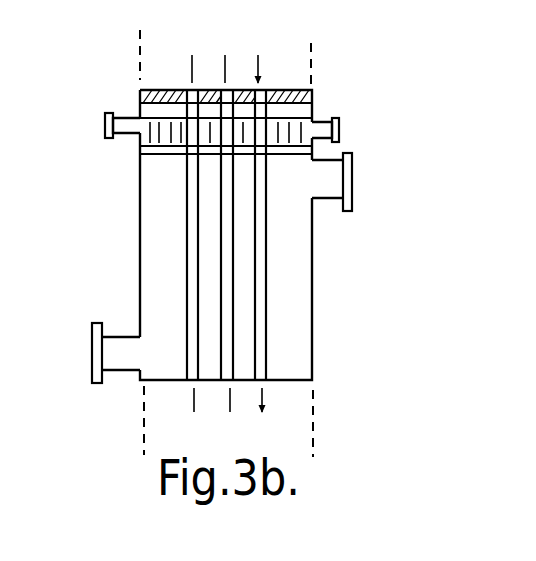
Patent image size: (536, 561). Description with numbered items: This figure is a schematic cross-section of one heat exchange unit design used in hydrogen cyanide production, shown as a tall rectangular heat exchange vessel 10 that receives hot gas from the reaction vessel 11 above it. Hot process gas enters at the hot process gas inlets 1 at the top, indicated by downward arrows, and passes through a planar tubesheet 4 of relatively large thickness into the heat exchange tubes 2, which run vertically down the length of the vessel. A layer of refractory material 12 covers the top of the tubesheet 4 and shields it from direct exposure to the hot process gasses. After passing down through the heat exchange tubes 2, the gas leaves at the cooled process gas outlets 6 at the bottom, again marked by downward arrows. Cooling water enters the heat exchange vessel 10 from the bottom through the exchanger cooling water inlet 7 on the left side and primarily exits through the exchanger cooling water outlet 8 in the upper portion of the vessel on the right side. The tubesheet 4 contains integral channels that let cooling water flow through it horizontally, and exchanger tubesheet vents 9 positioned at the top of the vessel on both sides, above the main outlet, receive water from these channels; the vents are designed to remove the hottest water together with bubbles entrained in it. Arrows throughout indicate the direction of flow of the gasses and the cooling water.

The hot process gas inlet 1 is at (225, 50).
The heat exchange tubes 2 is at (236, 282).
The tubesheet 4 is at (313, 111).
The cooled process gas outlet 6 is at (228, 420).
The exchanger cooling water inlet 7 is at (87, 352).
The exchanger cooling water outlet 8 is at (358, 182).
The exchanger tubesheet vent 9 is at (100, 127).
The heat exchange vessel 10 is at (314, 322).
The reaction vessel 11 is at (311, 52).
The refractory material 12 is at (157, 89).